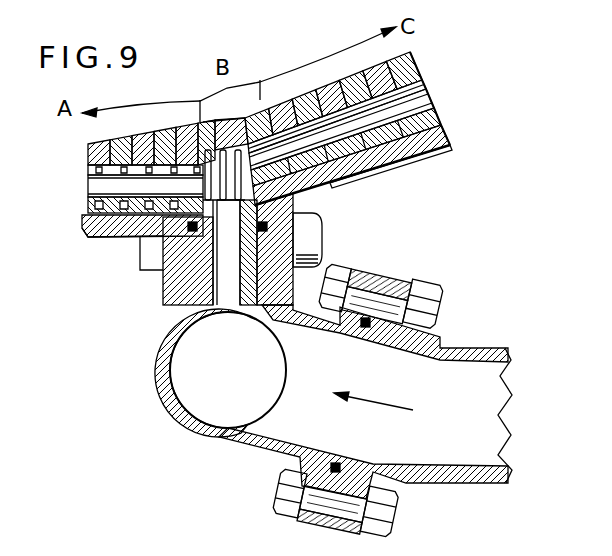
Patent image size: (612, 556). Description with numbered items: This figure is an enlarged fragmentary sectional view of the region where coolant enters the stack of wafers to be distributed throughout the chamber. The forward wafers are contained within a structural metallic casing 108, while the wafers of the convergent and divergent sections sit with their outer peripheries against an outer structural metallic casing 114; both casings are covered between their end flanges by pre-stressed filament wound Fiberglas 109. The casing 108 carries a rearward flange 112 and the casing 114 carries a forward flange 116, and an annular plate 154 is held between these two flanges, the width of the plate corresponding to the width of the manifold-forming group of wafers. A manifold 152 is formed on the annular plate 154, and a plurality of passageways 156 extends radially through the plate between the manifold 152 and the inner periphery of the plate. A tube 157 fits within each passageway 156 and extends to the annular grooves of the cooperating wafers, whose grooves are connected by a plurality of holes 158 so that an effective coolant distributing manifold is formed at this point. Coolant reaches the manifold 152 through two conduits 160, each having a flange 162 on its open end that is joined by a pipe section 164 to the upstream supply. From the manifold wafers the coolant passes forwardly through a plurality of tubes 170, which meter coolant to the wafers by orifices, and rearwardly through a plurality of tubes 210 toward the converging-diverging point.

The structural metallic casing 108 is at (84, 226).
The pre-stressed filament wound Fiberglas 109 is at (100, 242).
The flange 112 is at (168, 288).
The outer structural metallic casing 114 is at (439, 150).
The flange 116 is at (316, 254).
The manifold 152 is at (187, 368).
The annular plate 154 is at (295, 237).
The passageways 156 is at (230, 297).
The tube 157 is at (172, 280).
The holes 158 is at (232, 182).
The conduits 160 is at (255, 448).
The flange 162 is at (305, 524).
The pipe section 164 is at (488, 345).
The tubes 170 is at (93, 183).
The tubes 210 is at (355, 188).